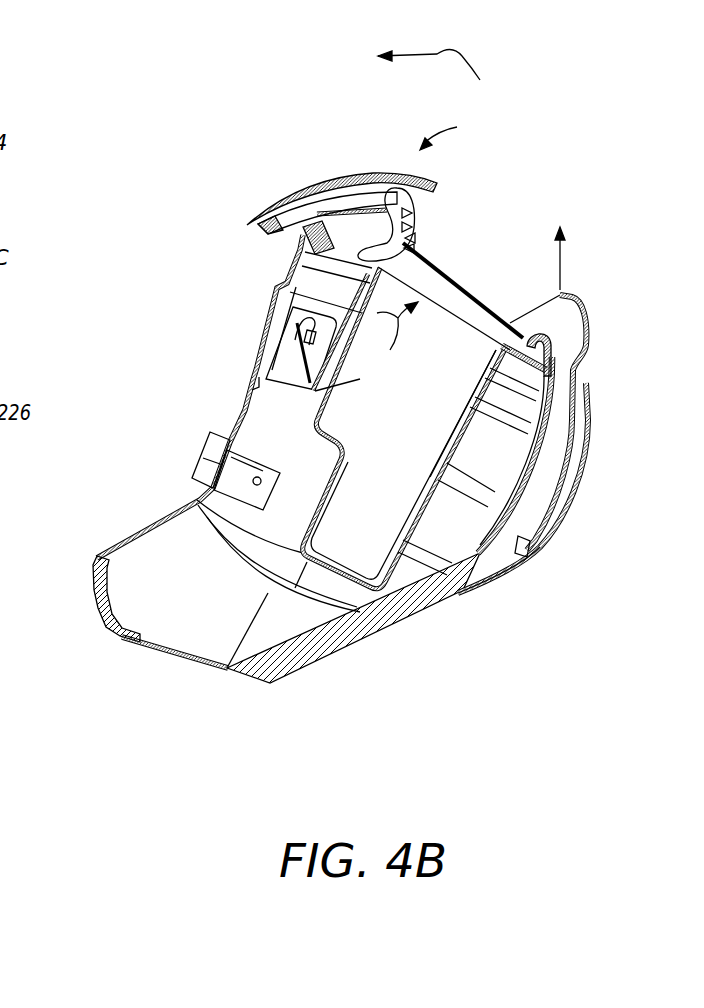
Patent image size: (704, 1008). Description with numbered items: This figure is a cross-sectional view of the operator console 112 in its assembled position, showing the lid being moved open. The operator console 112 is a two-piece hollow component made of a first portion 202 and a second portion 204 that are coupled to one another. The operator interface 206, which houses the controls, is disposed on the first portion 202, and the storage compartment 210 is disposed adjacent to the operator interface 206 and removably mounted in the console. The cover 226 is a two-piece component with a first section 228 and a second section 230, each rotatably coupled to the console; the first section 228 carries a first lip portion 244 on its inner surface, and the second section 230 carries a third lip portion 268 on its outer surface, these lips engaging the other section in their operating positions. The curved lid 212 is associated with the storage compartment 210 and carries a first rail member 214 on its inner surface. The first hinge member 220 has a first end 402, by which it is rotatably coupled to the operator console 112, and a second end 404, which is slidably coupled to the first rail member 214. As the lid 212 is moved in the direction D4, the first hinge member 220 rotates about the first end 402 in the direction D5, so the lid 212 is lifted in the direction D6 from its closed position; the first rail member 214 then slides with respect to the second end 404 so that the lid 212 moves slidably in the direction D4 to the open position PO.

The operator console 112 is at (528, 236).
The first portion 202 is at (132, 518).
The second portion 204 is at (328, 680).
The operator interface 206 is at (250, 315).
The storage compartment 210 is at (443, 372).
The lid 212 is at (413, 177).
The first rail member 214 is at (323, 196).
The first hinge member 220 is at (402, 218).
The cover 226 is at (605, 445).
The first section 228 is at (500, 582).
The second section 230 is at (587, 340).
The first lip portion 244 is at (588, 382).
The third lip portion 268 is at (523, 557).
The first end 402 is at (353, 230).
The second end 404 is at (397, 182).
The direction D4 is at (481, 57).
The direction D5 is at (390, 350).
The direction D6 is at (560, 272).
The open position PO is at (457, 127).